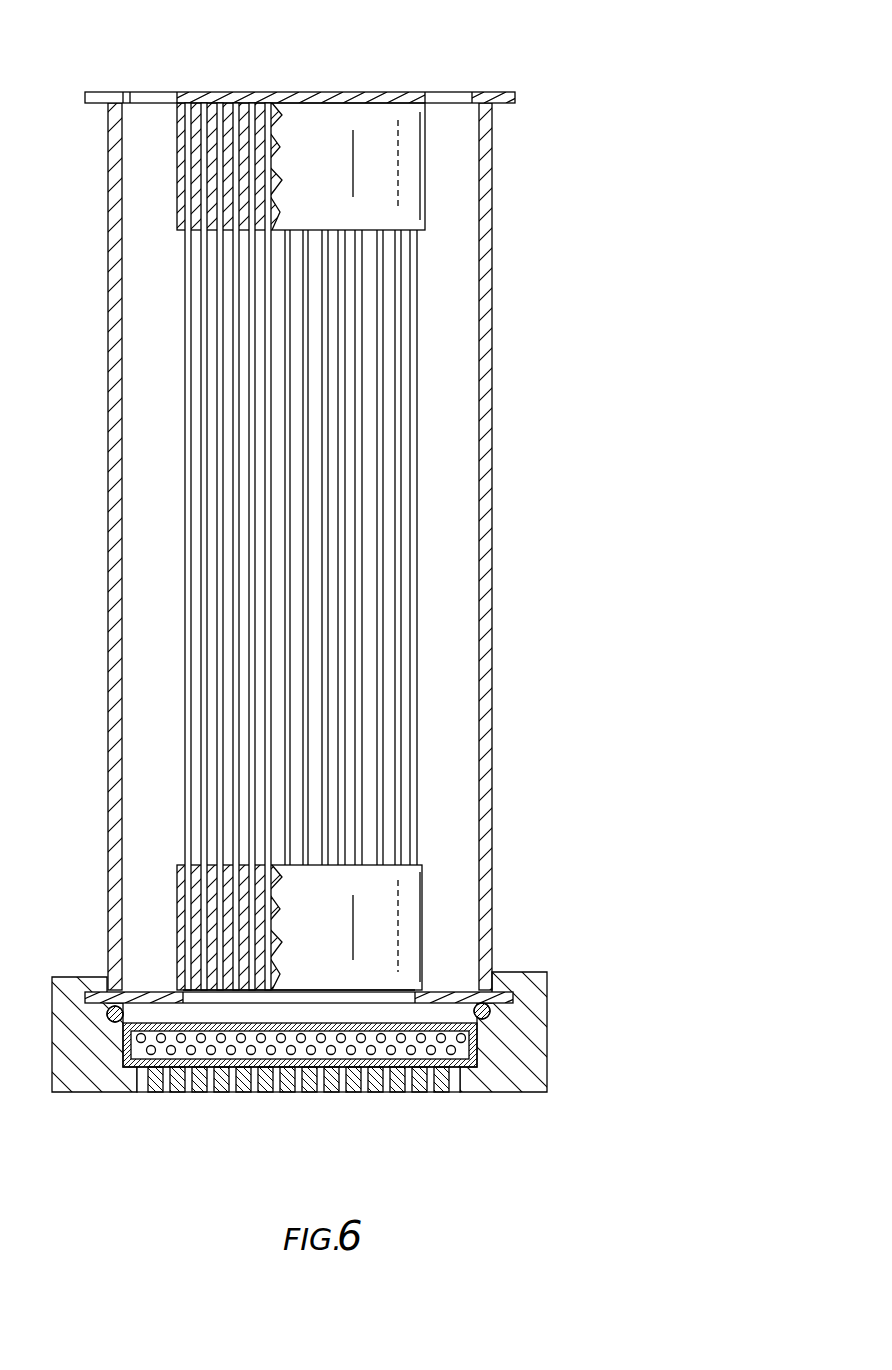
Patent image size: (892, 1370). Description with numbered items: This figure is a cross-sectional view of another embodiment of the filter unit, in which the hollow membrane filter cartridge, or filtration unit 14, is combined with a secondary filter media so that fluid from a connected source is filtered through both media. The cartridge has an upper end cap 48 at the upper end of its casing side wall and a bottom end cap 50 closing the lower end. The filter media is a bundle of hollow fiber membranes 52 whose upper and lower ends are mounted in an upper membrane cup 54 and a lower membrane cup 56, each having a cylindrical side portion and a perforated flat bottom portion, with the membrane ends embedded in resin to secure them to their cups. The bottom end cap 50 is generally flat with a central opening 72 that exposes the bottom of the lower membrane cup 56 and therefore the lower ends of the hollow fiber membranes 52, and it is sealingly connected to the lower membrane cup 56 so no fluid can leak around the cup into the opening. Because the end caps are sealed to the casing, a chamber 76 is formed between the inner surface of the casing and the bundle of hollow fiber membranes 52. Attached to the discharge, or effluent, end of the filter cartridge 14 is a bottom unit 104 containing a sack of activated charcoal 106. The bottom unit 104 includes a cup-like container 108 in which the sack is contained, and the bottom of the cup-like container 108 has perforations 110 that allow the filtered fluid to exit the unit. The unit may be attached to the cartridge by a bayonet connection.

The filtration unit 14 is at (505, 520).
The upper end cap 48 is at (493, 92).
The bottom end cap 50 is at (457, 988).
The hollow fiber membranes 52 is at (422, 382).
The upper membrane cup 54 is at (395, 188).
The lower membrane cup 56 is at (405, 908).
The central opening 72 is at (415, 995).
The chamber 76 is at (462, 630).
The bottom unit 104 is at (547, 1072).
The sack of activated charcoal 106 is at (432, 1043).
The cup-like container 108 is at (525, 1010).
The perforations 110 is at (167, 1078).